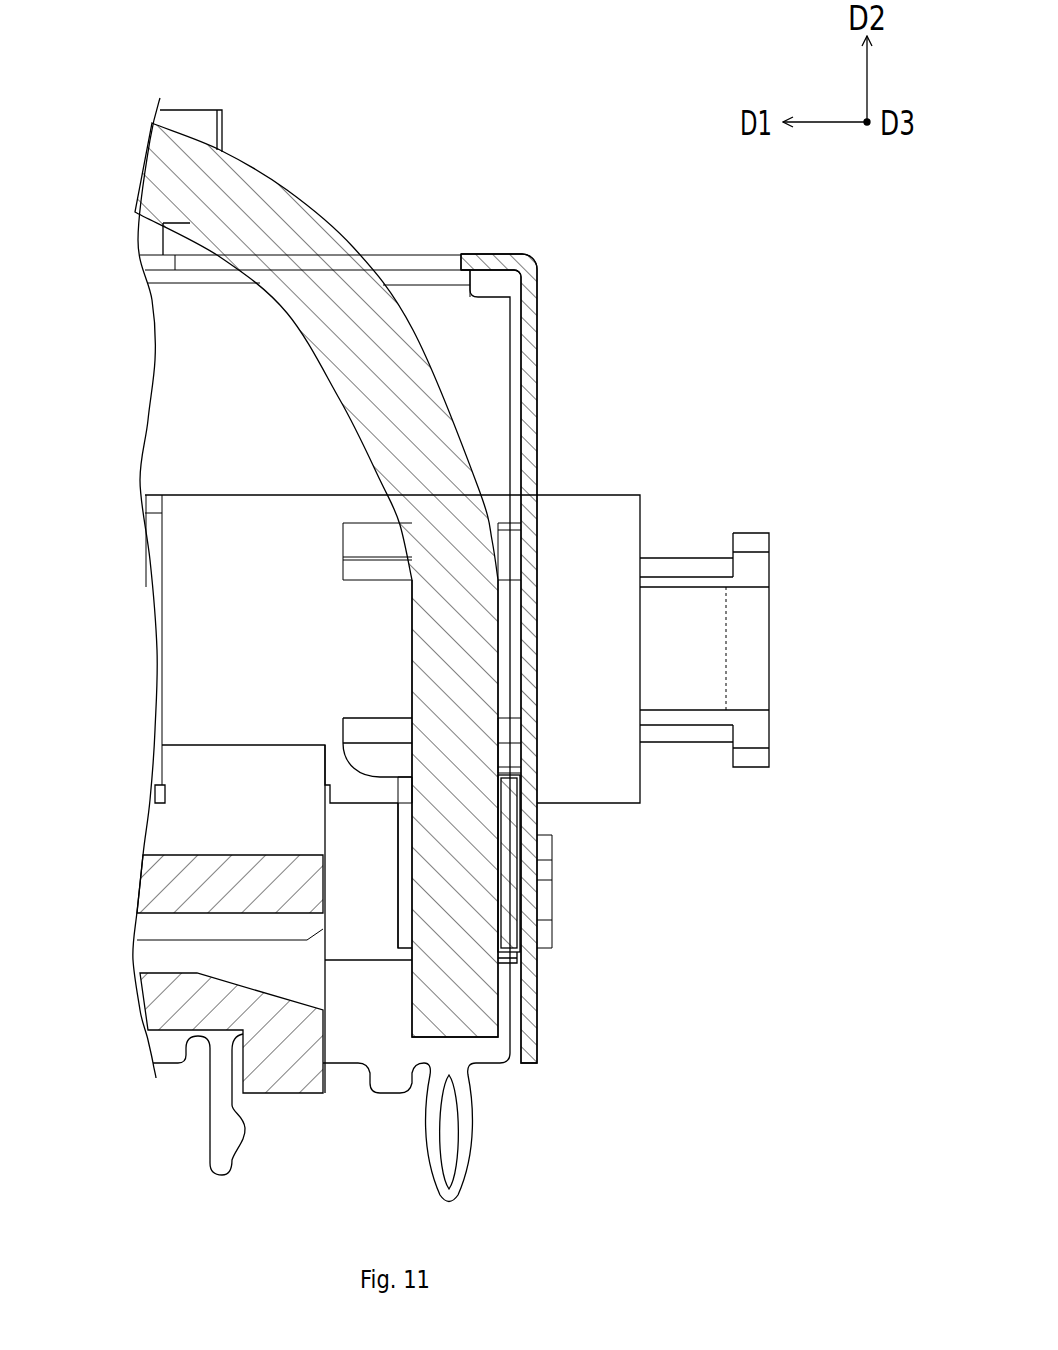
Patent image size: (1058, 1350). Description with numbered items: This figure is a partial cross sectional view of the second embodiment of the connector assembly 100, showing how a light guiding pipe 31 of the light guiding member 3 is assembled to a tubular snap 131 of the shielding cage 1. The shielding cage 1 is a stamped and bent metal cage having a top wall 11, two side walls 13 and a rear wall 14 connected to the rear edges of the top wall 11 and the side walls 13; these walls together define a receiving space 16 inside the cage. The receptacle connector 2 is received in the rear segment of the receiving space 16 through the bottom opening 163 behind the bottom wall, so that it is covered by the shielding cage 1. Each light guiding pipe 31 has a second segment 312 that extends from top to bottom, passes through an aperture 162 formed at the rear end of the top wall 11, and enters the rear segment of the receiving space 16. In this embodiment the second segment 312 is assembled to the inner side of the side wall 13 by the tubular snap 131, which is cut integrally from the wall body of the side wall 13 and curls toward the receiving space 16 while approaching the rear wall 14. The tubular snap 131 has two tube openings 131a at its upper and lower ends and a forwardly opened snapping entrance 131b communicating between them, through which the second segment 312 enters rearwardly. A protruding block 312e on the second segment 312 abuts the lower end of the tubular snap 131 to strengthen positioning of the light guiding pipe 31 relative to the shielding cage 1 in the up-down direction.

The connector assembly 100 is at (80, 61).
The shielding cage 1 is at (541, 270).
The top wall 11 is at (494, 256).
The side wall 13 is at (178, 318).
The rear wall 14 is at (539, 389).
The receiving space 16 is at (489, 355).
The aperture 162 is at (462, 263).
The bottom opening 163 is at (156, 1080).
The receptacle connector 2 is at (185, 494).
The light guiding member 3 is at (392, 575).
The light guiding pipe 31 is at (306, 196).
The second segment 312 is at (474, 643).
The protruding block 312e is at (516, 957).
The tubular snap 131 is at (519, 822).
The tube opening 131a is at (406, 776).
The snapping entrance 131b is at (412, 862).